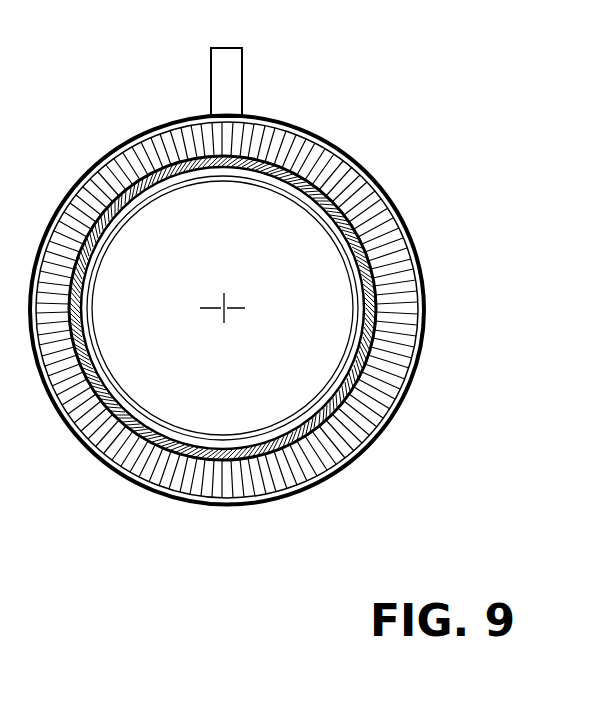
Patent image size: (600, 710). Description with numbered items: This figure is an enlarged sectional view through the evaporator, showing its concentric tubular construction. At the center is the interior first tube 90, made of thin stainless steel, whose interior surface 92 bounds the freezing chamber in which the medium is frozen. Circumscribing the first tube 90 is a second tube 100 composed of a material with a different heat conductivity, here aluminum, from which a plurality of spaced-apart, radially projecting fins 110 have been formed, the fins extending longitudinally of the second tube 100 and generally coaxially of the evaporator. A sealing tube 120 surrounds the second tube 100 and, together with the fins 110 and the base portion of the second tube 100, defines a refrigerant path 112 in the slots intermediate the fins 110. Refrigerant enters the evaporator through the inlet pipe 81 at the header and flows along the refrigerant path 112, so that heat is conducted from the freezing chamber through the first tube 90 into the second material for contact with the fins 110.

The inlet pipe 81 is at (233, 81).
The first tube 90 is at (167, 176).
The interior surface 92 is at (92, 274).
The second tube 100 is at (143, 184).
The fins 110 is at (293, 145).
The refrigerant path 112 is at (372, 213).
The sealing tube 120 is at (110, 150).